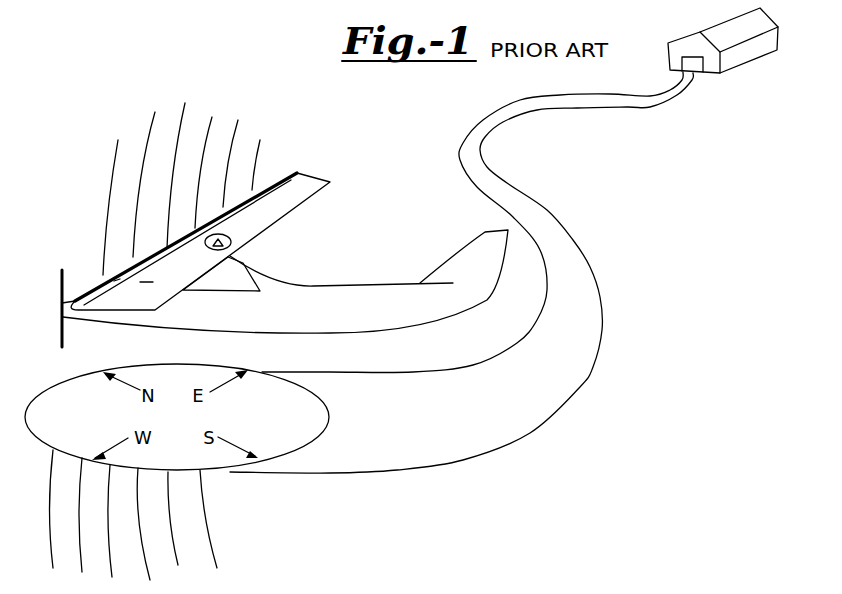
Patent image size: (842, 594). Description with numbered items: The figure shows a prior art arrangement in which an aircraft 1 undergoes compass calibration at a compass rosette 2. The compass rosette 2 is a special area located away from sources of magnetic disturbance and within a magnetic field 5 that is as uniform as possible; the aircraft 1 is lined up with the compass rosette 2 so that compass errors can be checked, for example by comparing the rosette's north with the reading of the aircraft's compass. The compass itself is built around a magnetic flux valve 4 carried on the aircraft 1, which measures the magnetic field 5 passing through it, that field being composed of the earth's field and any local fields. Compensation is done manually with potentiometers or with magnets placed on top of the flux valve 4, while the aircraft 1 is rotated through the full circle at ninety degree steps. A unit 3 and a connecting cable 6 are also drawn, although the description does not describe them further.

The aircraft 1 is at (317, 178).
The compass rosette 2 is at (130, 468).
The ground receiver unit 3 is at (760, 62).
The magnetic flux valve 4 is at (231, 243).
The magnetic field 5 is at (258, 165).
The cable 6 is at (597, 108).